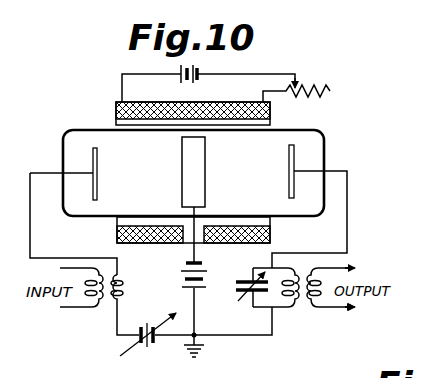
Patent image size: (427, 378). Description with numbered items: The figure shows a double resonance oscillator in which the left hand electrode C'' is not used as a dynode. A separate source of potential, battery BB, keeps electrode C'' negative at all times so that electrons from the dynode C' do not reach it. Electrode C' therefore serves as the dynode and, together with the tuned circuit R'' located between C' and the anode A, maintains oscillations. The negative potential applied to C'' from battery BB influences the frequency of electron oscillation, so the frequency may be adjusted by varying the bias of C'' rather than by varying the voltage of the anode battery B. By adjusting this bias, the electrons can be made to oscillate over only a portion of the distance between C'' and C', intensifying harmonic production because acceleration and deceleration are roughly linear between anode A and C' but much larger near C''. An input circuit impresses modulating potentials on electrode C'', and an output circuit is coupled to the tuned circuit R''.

The left hand electrode C'' is at (74, 174).
The anode A is at (206, 179).
The dynode C' is at (309, 206).
The anode battery B is at (207, 279).
The separate source of potential BB is at (157, 329).
The tuned circuit R'' is at (270, 303).